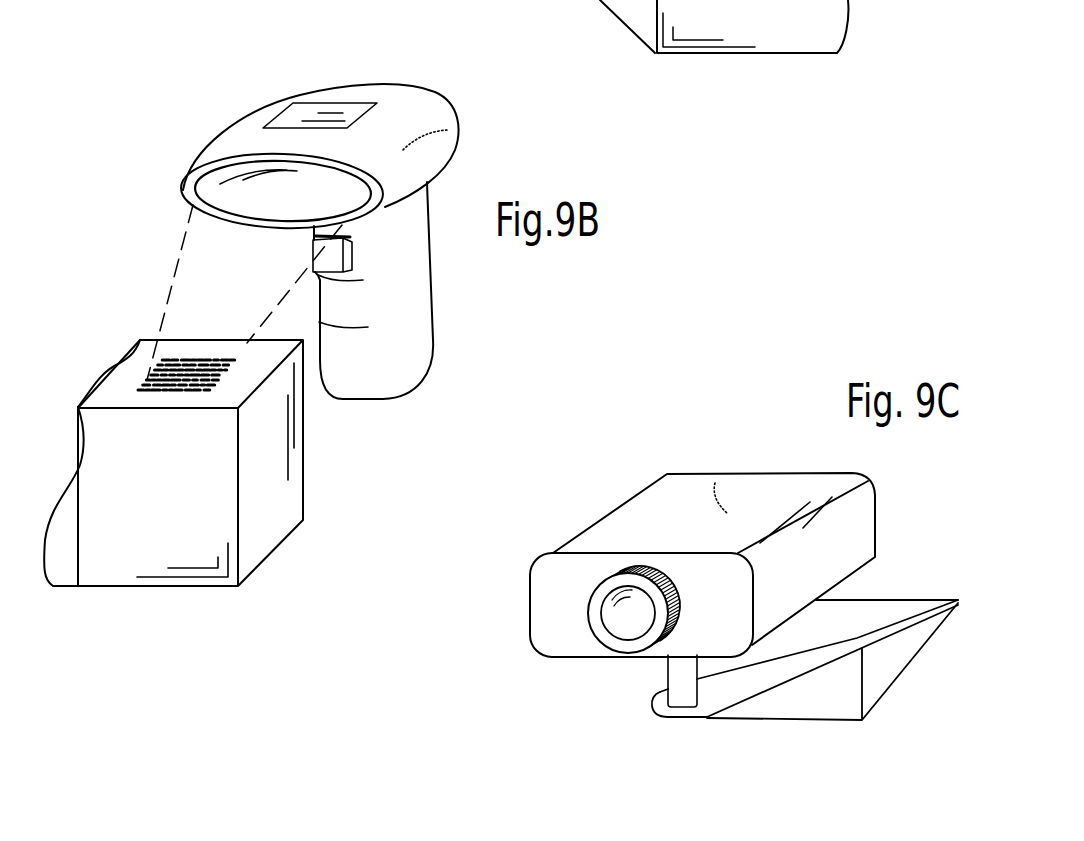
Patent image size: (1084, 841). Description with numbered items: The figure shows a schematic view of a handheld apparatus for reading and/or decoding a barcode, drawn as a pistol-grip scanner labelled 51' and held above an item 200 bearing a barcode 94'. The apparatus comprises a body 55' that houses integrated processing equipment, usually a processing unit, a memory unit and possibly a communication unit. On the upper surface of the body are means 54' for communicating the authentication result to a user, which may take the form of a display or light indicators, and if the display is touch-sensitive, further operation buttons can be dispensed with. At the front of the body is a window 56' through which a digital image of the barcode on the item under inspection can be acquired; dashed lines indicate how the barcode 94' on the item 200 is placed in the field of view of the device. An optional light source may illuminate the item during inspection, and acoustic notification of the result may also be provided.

The handheld imaging device (scanner) 51' is at (300, 227).
The means for communicating the authentication result 54' is at (381, 87).
The body 55' is at (474, 124).
The window 56' is at (247, 212).
The optical code (barcode) 94' is at (139, 357).
The package / object 200 is at (219, 469).